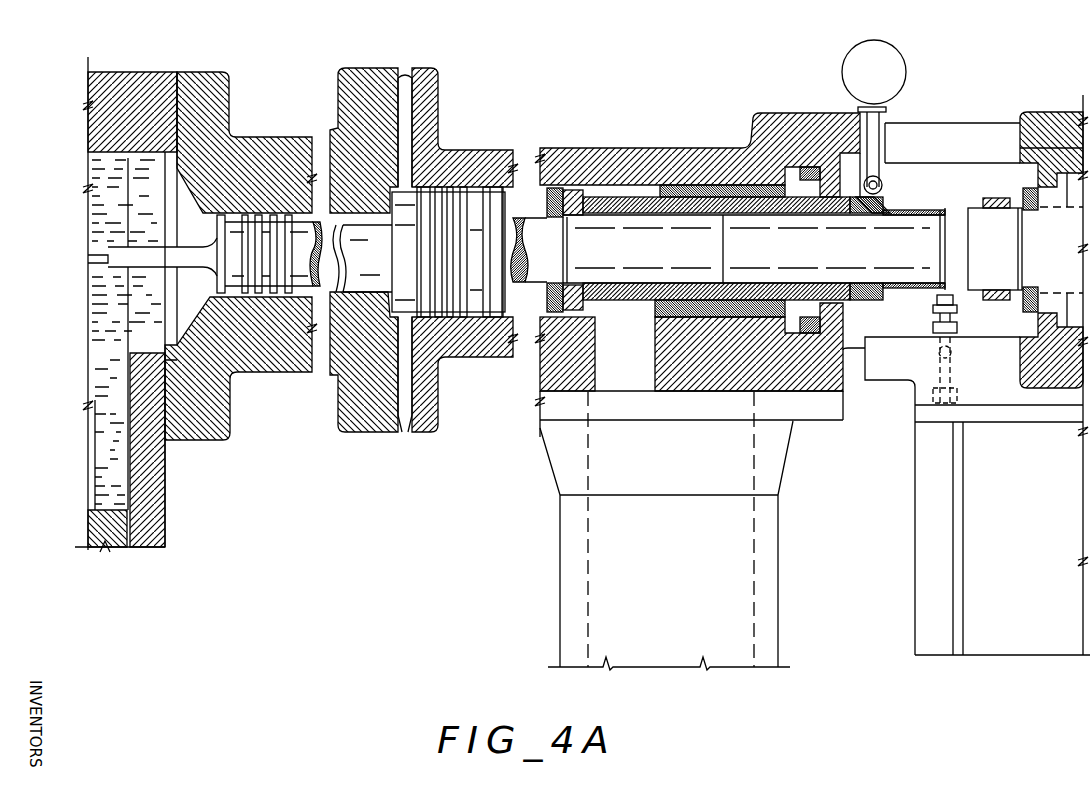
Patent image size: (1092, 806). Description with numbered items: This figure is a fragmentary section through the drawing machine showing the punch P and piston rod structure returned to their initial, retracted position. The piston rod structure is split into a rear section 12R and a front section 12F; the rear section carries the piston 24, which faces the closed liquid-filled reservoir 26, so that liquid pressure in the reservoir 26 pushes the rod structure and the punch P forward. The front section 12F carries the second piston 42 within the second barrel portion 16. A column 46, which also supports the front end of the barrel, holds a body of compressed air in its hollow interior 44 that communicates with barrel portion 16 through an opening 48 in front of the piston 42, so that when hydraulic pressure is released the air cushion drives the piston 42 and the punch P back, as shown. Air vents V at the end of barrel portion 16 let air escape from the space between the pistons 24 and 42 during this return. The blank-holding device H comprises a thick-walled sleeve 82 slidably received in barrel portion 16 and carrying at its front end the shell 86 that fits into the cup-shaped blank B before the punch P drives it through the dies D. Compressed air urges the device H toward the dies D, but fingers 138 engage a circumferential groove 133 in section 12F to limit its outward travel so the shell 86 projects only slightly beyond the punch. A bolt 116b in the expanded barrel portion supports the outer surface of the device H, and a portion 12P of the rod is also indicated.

The piston 24 is at (227, 240).
The reservoir 26 is at (142, 311).
The second piston 42 is at (447, 207).
The air vents V is at (405, 95).
The rear piston rod section 12R is at (362, 258).
The fingers 138 is at (547, 207).
The circumferential groove 133 is at (563, 257).
The front piston rod section 12F is at (643, 249).
The piston rod portion 12P is at (507, 280).
The second barrel portion 16 is at (680, 163).
The sleeve 82 is at (777, 215).
The punch P is at (834, 249).
The shell 86 is at (901, 203).
The blank-holding device H is at (912, 200).
The cup-shaped blank B is at (974, 207).
The dies D is at (1024, 306).
The inwardly projecting bolt 116b is at (937, 300).
The opening 48 is at (607, 348).
The column 46 is at (563, 531).
The hollow interior of column 44 is at (669, 531).